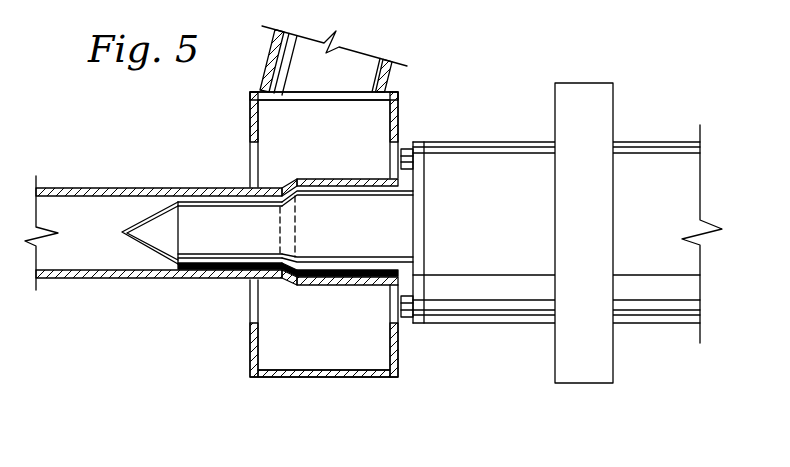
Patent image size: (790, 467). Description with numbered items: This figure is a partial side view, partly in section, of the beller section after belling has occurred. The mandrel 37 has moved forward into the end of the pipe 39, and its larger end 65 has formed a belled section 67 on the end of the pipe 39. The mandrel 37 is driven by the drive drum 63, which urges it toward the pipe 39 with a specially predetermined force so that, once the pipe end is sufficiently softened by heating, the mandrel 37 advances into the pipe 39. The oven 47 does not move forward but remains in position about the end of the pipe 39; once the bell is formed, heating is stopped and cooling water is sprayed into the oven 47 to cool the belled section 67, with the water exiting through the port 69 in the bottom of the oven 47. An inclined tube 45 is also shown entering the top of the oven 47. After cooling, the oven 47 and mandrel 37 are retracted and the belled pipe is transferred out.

The mandrel 37 is at (245, 230).
The pipe 39 is at (128, 279).
The inclined inlet tube 45 is at (268, 50).
The oven 47 is at (268, 377).
The drive drum 63 is at (507, 142).
The larger end 65 is at (368, 238).
The belled section 67 is at (355, 285).
The port 69 is at (318, 372).